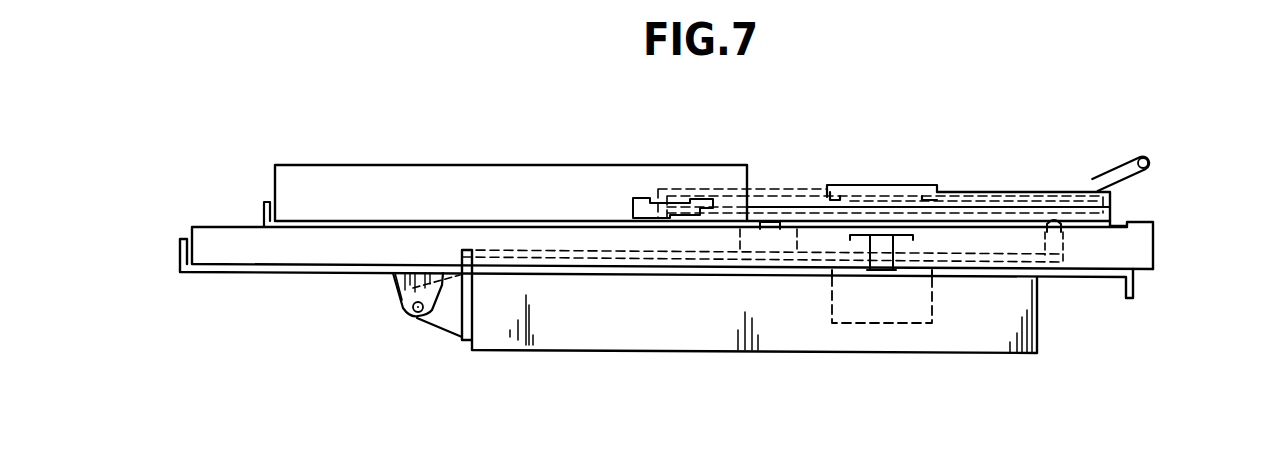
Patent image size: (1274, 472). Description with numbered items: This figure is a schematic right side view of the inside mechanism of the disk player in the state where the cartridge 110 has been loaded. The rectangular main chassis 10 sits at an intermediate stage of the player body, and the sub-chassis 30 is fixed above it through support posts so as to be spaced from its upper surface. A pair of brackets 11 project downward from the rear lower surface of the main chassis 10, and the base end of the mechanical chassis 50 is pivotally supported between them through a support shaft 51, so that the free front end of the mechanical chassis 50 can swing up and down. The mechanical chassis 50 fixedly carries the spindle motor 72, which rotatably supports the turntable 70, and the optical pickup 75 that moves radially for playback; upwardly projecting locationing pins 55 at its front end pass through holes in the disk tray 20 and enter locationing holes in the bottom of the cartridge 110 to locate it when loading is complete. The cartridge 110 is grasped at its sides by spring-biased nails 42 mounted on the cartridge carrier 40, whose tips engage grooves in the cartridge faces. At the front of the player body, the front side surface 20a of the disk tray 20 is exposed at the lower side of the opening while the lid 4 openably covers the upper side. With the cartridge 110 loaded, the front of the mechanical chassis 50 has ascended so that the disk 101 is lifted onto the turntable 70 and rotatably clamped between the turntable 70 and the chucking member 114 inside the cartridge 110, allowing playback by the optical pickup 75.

The lid 4 is at (1132, 177).
The main chassis 10 is at (271, 279).
The bracket 11 is at (397, 284).
The disk tray 20 is at (209, 221).
The front side surface of the disk tray 20a is at (1156, 238).
The sub-chassis 30 is at (266, 196).
The cartridge carrier 40 is at (450, 158).
The nail 42 is at (707, 203).
The mechanical chassis 50 is at (706, 360).
The support shaft 51 is at (412, 320).
The locationing pin 55 is at (1063, 240).
The turntable 70 is at (903, 212).
The spindle motor 72 is at (935, 312).
The optical pickup 75 is at (803, 240).
The digital optical disk 101 is at (985, 208).
The cartridge 110 is at (1035, 184).
The chucking member 114 is at (867, 190).